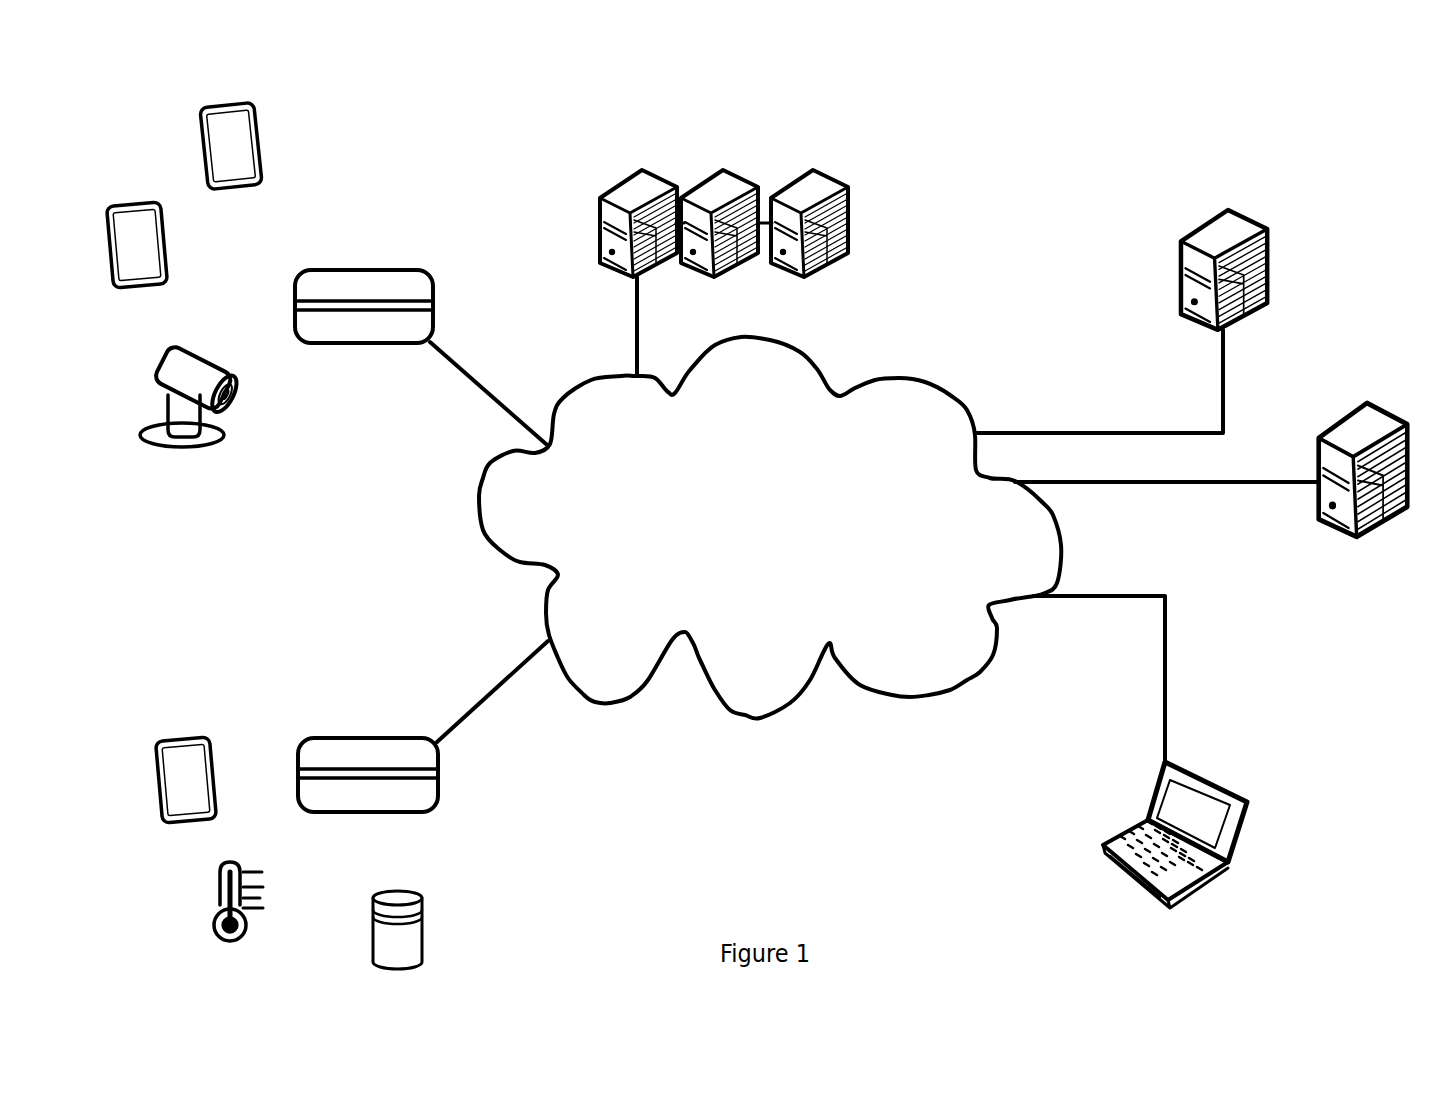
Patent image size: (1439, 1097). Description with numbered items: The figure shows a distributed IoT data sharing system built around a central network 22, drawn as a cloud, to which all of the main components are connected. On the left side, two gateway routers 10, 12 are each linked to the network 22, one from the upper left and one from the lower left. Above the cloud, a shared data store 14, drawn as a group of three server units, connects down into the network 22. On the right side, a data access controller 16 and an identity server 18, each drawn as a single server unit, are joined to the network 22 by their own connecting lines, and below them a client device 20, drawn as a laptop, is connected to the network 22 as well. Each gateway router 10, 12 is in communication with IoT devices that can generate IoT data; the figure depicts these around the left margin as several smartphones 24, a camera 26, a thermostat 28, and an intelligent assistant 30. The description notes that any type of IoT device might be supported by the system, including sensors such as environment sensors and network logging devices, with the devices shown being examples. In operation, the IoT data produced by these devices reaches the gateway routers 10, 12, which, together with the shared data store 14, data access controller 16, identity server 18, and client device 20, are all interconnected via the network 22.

The gateway router 10 is at (330, 273).
The gateway router 12 is at (347, 745).
The shared data store 14 is at (800, 162).
The data access controller 16 is at (1240, 227).
The identity server 18 is at (1367, 440).
The client device 20 is at (1200, 797).
The network 22 is at (918, 391).
The smartphones 24 is at (233, 112).
The camera 26 is at (180, 355).
The thermostat 28 is at (237, 863).
The intelligent assistant 30 is at (397, 898).